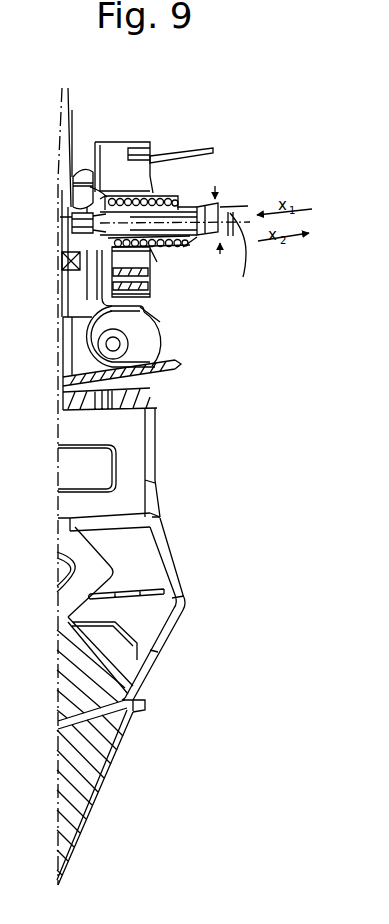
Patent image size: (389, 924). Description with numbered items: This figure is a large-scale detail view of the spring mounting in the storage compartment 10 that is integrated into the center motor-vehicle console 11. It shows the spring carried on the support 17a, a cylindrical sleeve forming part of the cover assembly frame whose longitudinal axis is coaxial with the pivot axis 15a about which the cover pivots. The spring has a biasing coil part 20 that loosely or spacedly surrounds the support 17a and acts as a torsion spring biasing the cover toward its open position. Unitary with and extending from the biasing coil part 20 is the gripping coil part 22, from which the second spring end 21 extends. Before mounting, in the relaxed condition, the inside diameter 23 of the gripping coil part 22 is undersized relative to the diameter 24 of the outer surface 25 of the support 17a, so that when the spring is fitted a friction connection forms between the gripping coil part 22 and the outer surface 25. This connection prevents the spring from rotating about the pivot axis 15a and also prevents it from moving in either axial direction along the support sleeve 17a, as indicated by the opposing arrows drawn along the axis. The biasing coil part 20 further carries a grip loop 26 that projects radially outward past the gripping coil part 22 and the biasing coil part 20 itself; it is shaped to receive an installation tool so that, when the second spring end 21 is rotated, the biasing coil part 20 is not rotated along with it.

The storage compartment 10 is at (265, 268).
The center motor-vehicle console 11 is at (225, 540).
The pivot axis 15a is at (221, 264).
The support 17a is at (195, 206).
The biasing coil part 20 is at (121, 194).
The second spring end 21 is at (183, 190).
The gripping coil part 22 is at (172, 190).
The inside diameter 23 is at (146, 255).
The diameter 24 is at (222, 209).
The outer surface 25 is at (182, 248).
The grip loop 26 is at (161, 190).